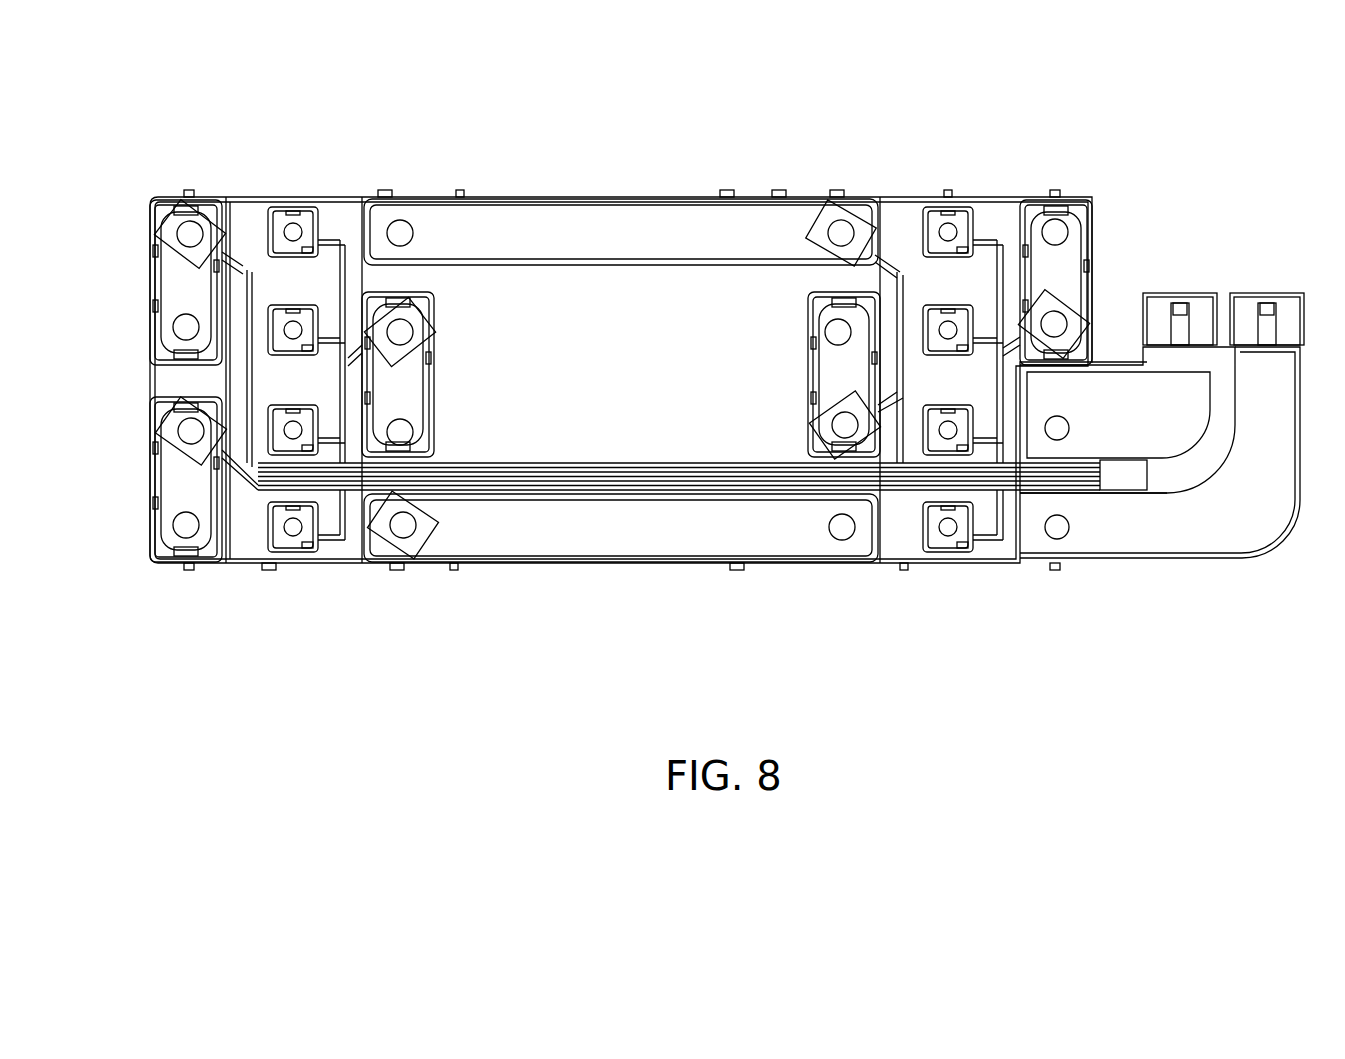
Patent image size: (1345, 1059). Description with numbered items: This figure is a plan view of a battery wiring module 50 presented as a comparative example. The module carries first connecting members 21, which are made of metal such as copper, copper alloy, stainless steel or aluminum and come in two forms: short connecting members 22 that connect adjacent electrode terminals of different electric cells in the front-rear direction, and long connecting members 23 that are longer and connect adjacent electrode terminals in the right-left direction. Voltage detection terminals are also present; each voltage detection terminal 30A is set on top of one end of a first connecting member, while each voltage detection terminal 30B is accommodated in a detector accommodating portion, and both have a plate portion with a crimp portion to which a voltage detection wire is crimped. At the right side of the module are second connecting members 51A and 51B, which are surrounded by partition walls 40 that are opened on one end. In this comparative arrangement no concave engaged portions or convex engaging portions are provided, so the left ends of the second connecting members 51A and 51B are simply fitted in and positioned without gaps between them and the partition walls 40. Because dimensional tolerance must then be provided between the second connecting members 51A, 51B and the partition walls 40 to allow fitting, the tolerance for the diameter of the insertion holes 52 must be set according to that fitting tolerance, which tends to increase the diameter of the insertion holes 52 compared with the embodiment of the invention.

The battery wiring module 50 is at (702, 124).
The first connecting member 21 is at (514, 405).
The short connecting member 22 is at (205, 545).
The long connecting member 23 is at (561, 226).
The voltage detection terminal 30A is at (845, 198).
The voltage detection terminal 30B is at (975, 205).
The partition wall 40 is at (1040, 462).
The second connecting member 51A is at (1118, 425).
The second connecting member 51B is at (1240, 538).
The insertion hole 52 is at (1058, 422).